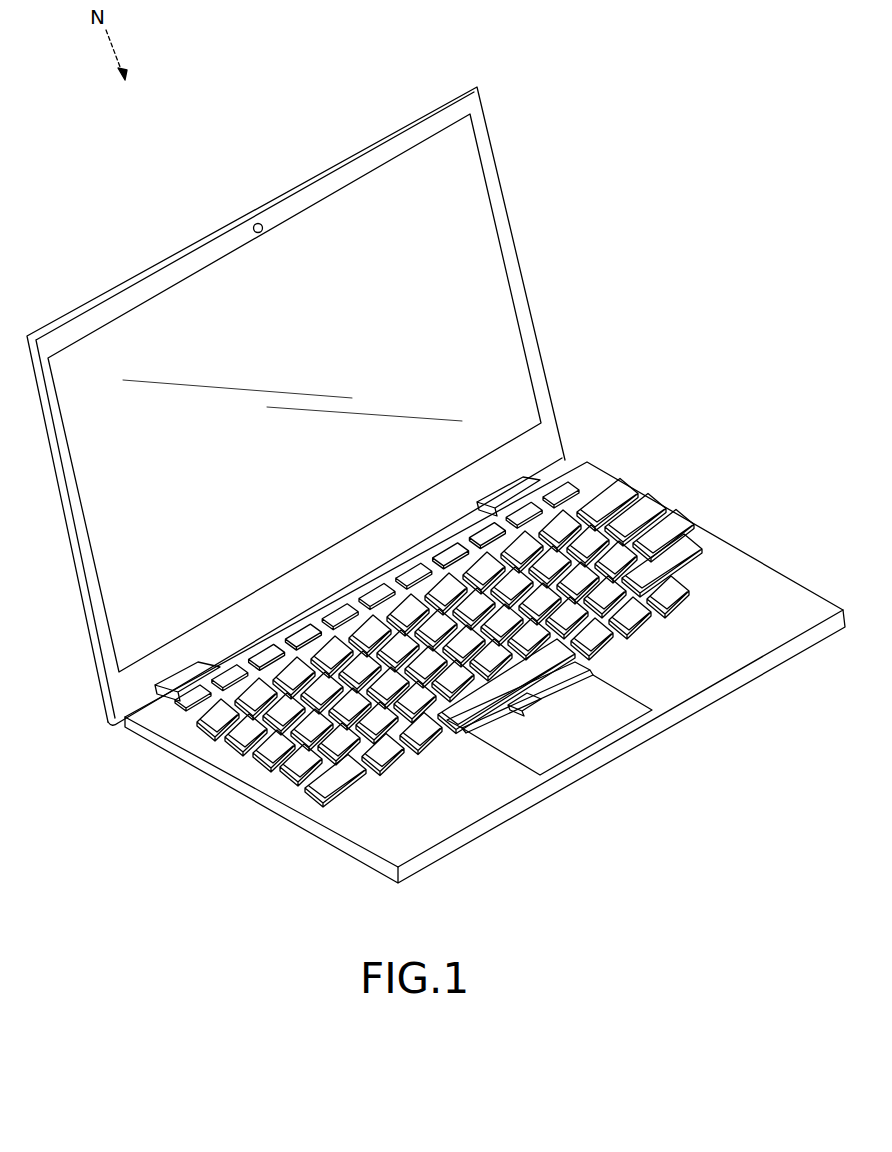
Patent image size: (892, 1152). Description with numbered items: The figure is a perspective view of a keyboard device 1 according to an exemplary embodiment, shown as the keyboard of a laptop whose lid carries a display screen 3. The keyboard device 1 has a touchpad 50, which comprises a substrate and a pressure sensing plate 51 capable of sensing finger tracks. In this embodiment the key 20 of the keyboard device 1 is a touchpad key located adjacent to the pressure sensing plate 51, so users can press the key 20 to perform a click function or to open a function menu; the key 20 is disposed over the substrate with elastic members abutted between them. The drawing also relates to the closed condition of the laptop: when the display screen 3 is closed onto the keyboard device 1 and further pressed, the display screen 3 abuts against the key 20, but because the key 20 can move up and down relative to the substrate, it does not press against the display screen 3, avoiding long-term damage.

The keyboard device 1 is at (690, 528).
The display screen 3 is at (478, 256).
The touchpad 50 is at (591, 733).
The pressure sensing plate 51 is at (597, 730).
The key 20 is at (530, 698).